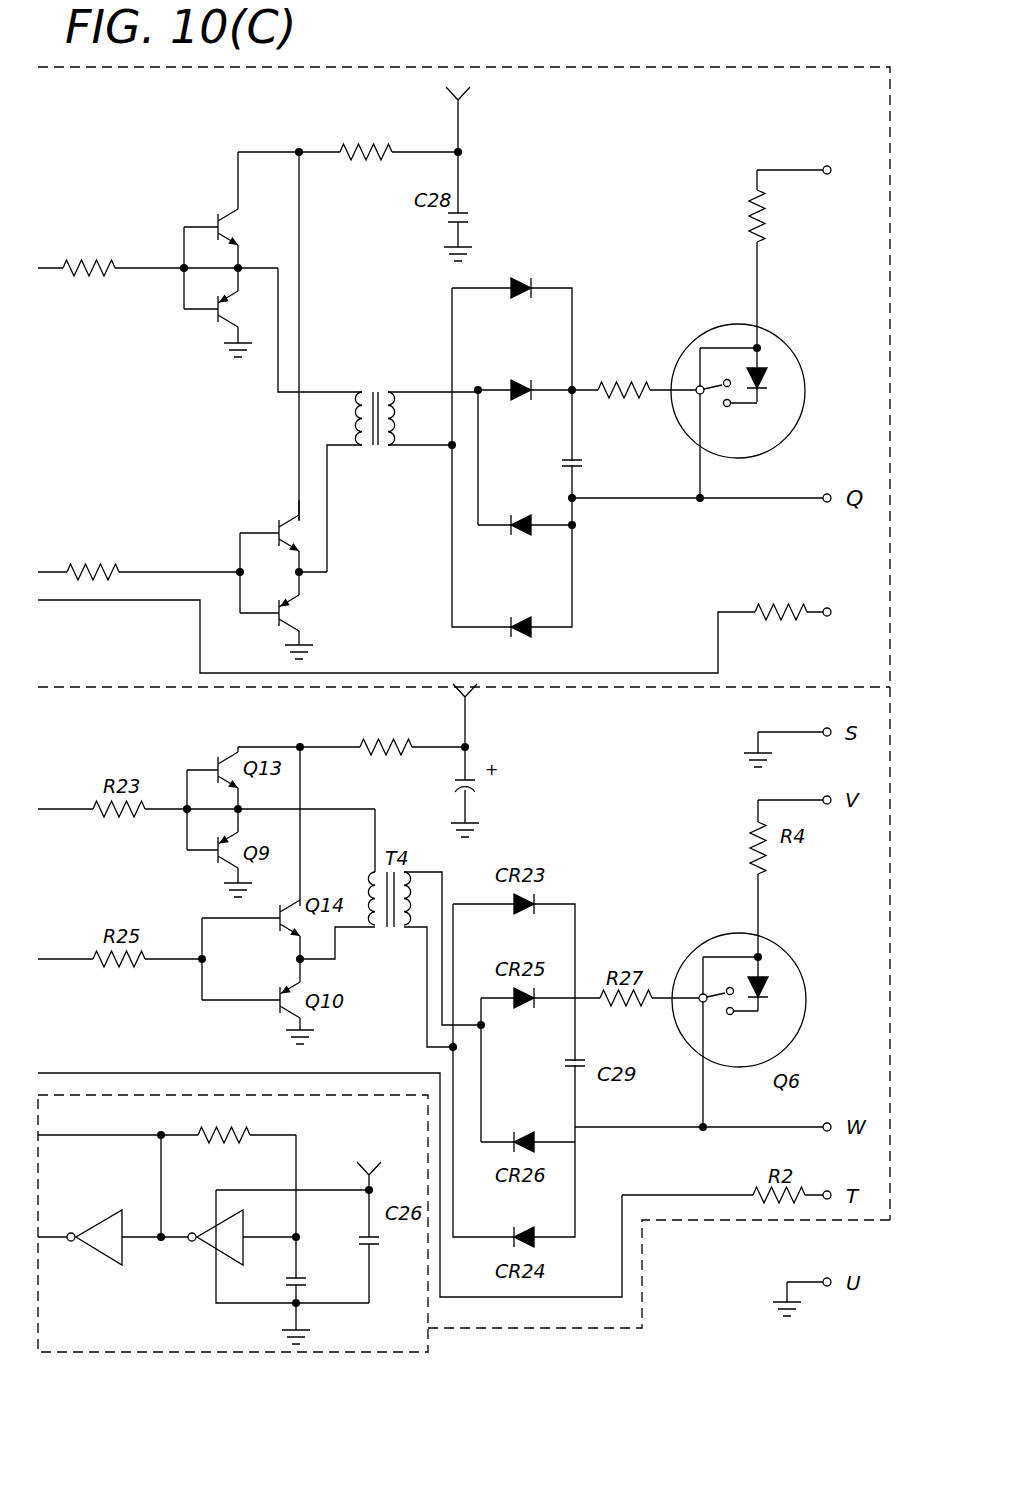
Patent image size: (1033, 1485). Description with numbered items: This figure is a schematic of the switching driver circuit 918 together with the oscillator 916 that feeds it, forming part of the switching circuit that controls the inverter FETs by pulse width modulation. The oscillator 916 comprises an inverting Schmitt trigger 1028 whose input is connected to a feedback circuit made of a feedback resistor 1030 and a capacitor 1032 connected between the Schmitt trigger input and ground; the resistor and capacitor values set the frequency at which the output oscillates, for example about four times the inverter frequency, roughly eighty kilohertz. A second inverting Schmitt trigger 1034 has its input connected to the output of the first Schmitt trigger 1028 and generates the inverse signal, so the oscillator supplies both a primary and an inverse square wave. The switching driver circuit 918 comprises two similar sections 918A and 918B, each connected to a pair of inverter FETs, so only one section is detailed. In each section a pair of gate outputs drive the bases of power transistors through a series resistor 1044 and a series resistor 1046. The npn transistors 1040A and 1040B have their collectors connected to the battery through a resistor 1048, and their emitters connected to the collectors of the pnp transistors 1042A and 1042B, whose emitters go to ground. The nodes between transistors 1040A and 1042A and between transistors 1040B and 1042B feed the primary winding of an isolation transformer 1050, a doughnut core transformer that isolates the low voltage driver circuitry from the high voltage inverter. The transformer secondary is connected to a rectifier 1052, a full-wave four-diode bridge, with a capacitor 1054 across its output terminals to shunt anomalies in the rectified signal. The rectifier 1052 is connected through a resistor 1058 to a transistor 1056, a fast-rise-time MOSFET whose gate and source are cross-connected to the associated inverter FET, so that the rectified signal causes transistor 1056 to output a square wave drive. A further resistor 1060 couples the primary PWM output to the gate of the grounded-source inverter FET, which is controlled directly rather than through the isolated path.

The switching driver circuit 918 is at (668, 1248).
The first section of switching driver circuit 918A is at (890, 247).
The second section of switching driver circuit 918B is at (890, 908).
The oscillator 916 is at (60, 1352).
The inverting Schmitt trigger 1028 is at (208, 1250).
The feedback resistor 1030 is at (245, 1135).
The capacitor 1032 is at (315, 1282).
The second inverting Schmitt trigger 1034 is at (95, 1222).
The npn bipolar junction transistor 1040A is at (232, 200).
The npn bipolar junction transistor 1040B is at (292, 510).
The pnp bipolar junction transistor 1042A is at (216, 342).
The pnp bipolar junction transistor 1042B is at (292, 630).
The resistor 1044 is at (103, 288).
The resistor 1046 is at (118, 565).
The resistor 1048 is at (365, 160).
The isolation transformer 1050 is at (381, 486).
The rectifier 1052 is at (562, 251).
The capacitor 1054 is at (565, 462).
The transistor 1056 is at (705, 330).
The resistor 1058 is at (625, 400).
The resistor 1060 is at (768, 624).